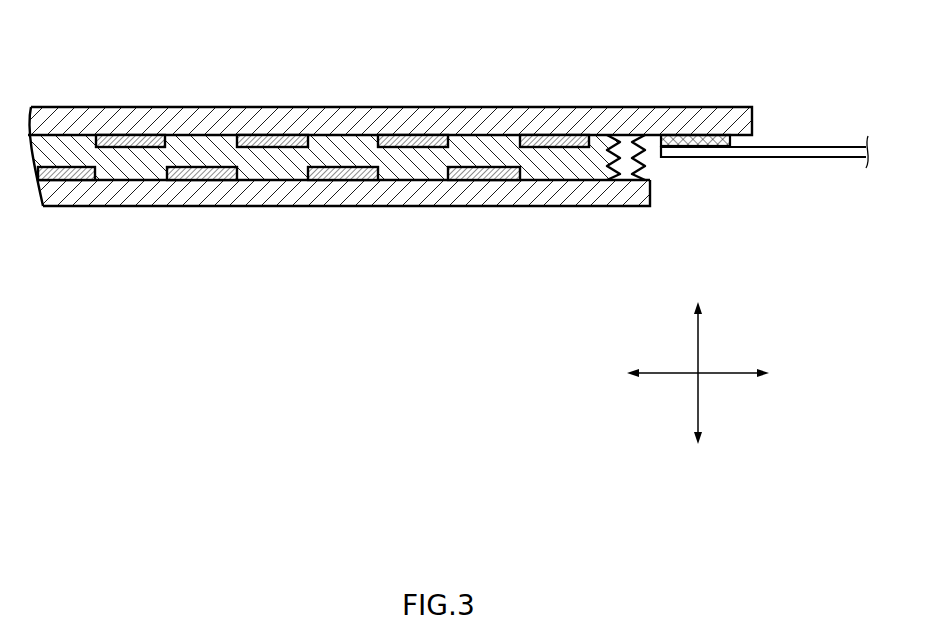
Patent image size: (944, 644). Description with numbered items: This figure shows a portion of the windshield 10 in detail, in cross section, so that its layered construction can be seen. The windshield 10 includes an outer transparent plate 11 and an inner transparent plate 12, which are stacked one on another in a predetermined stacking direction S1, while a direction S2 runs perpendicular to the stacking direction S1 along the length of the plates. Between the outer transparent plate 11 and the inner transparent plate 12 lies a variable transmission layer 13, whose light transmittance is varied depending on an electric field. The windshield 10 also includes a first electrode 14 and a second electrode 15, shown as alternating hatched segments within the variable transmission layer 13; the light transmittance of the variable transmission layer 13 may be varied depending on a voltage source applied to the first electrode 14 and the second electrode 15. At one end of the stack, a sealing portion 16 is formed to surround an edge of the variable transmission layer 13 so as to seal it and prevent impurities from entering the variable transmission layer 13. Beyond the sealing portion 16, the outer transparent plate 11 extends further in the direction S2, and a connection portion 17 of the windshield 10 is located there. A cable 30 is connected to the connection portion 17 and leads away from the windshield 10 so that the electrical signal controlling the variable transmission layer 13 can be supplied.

The windshield 10 is at (438, 98).
The outer transparent plate 11 is at (188, 107).
The inner transparent plate 12 is at (166, 197).
The variable transmission layer 13 is at (272, 175).
The first electrode 14 is at (271, 145).
The second electrode 15 is at (341, 172).
The sealing portion 16 is at (624, 142).
The connection portion 17 is at (697, 142).
The cable 30 is at (798, 152).
The stacking direction S1 is at (699, 340).
The direction perpendicular to the stacking direction S2 is at (730, 375).